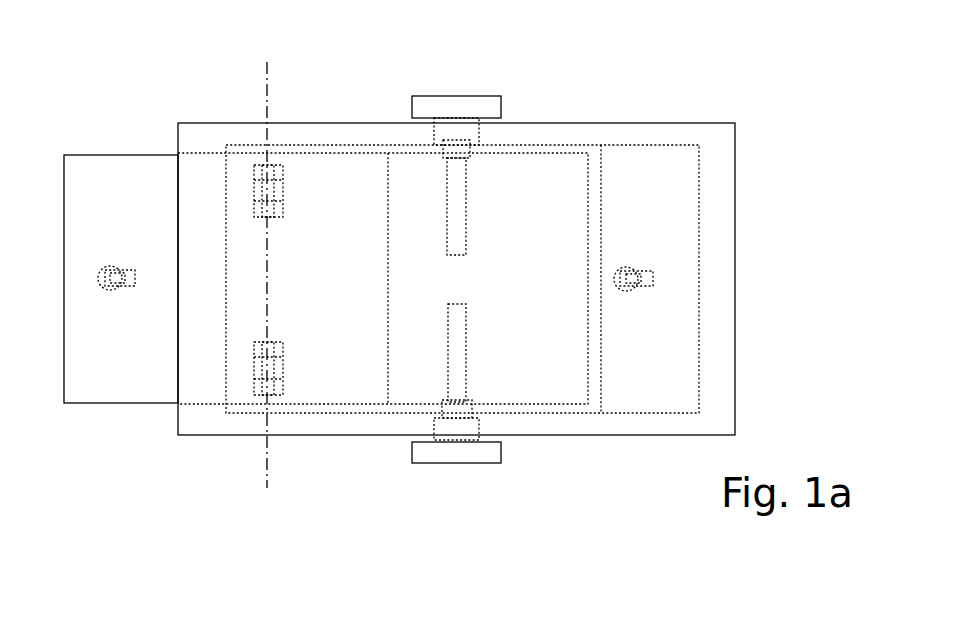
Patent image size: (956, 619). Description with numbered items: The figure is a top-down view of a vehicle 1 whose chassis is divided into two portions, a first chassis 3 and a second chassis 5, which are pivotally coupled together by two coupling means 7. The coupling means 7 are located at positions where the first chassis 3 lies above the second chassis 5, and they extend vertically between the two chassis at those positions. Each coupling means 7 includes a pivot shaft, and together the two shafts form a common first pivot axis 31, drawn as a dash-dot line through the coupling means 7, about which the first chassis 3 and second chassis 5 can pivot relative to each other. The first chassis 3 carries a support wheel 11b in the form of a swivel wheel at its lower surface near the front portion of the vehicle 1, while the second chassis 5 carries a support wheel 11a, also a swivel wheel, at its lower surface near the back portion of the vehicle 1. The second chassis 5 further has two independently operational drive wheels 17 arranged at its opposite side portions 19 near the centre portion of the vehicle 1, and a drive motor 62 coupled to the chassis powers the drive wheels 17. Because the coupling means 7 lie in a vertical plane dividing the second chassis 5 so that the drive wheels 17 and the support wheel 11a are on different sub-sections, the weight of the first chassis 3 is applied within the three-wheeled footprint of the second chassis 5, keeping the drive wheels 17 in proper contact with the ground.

The vehicle 1 is at (218, 59).
The first chassis 3 is at (558, 427).
The second chassis 5 is at (80, 168).
The coupling means 7 is at (282, 200).
The support wheel 11a is at (133, 286).
The support wheel 11b is at (648, 283).
The drive wheels 17 is at (467, 100).
The side portions 19 is at (511, 139).
The first pivot axis 31 is at (269, 82).
The drive motor 62 is at (465, 133).